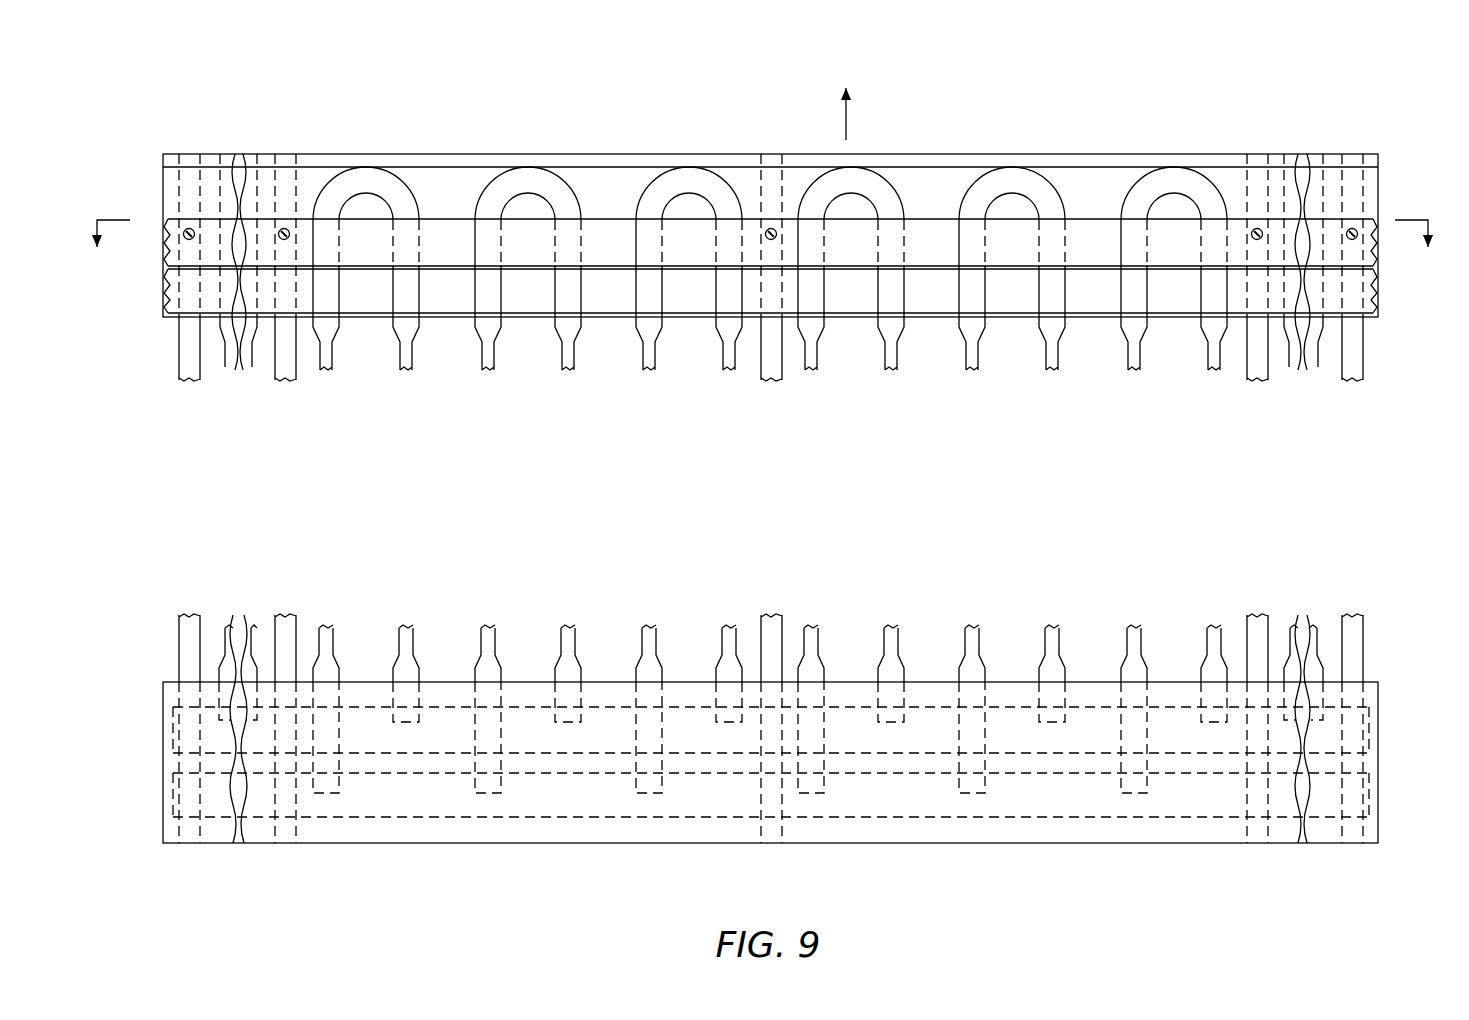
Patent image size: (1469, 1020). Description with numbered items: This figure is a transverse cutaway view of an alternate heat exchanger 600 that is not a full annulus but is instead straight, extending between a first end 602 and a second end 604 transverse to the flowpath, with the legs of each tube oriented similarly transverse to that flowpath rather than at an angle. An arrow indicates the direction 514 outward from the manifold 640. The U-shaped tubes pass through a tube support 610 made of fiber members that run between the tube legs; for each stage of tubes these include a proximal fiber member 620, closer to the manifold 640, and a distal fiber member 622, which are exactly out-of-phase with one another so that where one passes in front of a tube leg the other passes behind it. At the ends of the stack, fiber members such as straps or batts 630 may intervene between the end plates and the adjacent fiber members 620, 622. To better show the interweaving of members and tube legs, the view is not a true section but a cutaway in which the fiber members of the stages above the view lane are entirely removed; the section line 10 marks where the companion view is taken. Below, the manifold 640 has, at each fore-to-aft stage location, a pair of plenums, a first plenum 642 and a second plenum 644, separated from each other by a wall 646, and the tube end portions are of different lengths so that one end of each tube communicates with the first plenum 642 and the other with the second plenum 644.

The heat exchanger 600 is at (759, 223).
The end 602 is at (1393, 192).
The end 604 is at (125, 183).
The tube support 610 is at (1298, 140).
The proximal fiber member 620 is at (685, 297).
The distal fiber member 622 is at (675, 233).
The batts 630 is at (603, 203).
The direction outward from the manifold 514 is at (847, 119).
The manifold 640 is at (799, 755).
The first plenum 642 is at (1323, 733).
The second plenum 644 is at (1322, 800).
The wall 646 is at (1195, 763).
The section line for FIG. 10 is at (762, 258).